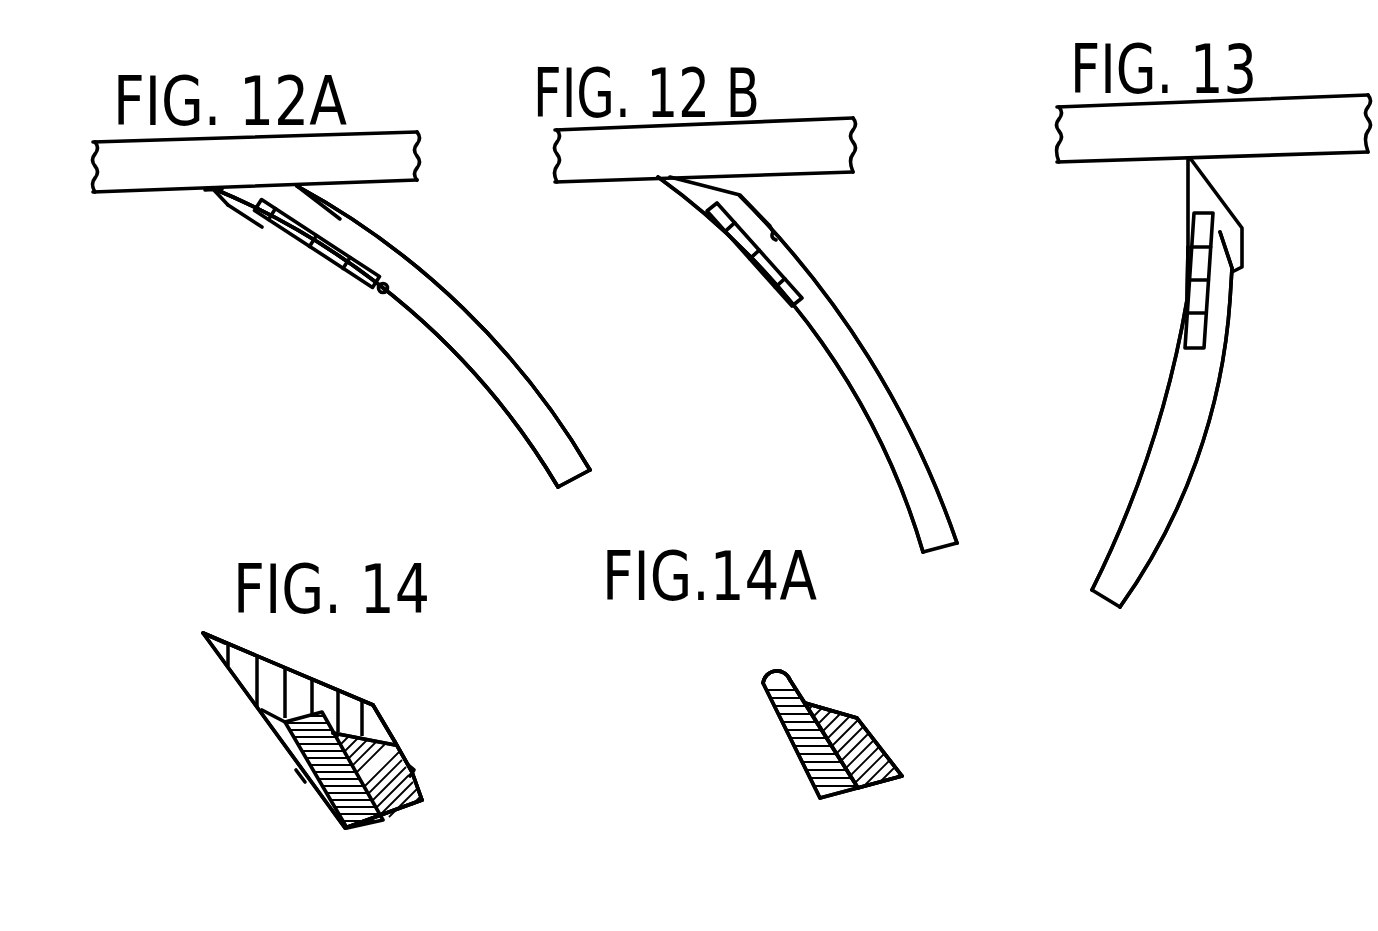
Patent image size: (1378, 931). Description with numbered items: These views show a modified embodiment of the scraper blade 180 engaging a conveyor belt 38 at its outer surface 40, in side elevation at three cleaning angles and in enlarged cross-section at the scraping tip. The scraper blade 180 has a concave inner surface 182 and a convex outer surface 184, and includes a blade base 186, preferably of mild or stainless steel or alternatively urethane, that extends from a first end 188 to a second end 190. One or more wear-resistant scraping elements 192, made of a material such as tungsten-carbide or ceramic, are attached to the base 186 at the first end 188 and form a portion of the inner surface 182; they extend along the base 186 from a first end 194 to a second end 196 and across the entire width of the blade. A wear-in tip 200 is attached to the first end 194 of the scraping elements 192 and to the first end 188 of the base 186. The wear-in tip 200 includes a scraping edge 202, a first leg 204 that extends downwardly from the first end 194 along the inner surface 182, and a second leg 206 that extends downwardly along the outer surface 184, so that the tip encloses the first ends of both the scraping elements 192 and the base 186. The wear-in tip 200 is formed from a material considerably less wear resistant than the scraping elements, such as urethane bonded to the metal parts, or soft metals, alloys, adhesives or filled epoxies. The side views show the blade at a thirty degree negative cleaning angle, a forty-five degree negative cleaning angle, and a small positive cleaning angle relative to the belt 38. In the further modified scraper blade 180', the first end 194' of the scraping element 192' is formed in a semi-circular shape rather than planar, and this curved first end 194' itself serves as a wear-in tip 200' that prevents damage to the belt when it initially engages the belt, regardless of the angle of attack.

In FIG. 12A, the conveyor belt 38 is at (372, 143).
In FIG. 12B, the conveyor belt 38 is at (793, 133).
In FIG. 13, the conveyor belt 38 is at (1300, 113).
In FIG. 12A, the outer surface 40 is at (157, 193).
In FIG. 12B, the outer surface 40 is at (813, 175).
In FIG. 13, the outer surface 40 is at (1313, 157).
In FIG. 12A, the scraper blade 180 is at (401, 336).
In FIG. 12B, the scraper blade 180 is at (816, 364).
In FIG. 13, the scraper blade 180 is at (1216, 419).
In FIG. 14, the scraper blade 180 is at (393, 730).
In FIG. 14A, the scraper blade 180' is at (913, 734).
In FIG. 12A, the concave inner surface 182 is at (440, 340).
In FIG. 14, the concave inner surface 182 is at (347, 832).
In FIG. 14A, the concave inner surface 182 is at (820, 805).
In FIG. 12A, the convex outer surface 184 is at (487, 327).
In FIG. 14, the convex outer surface 184 is at (428, 792).
In FIG. 14A, the convex outer surface 184 is at (902, 762).
In FIG. 12A, the blade base 186 is at (420, 283).
In FIG. 12B, the blade base 186 is at (905, 433).
In FIG. 13, the blade base 186 is at (1200, 400).
In FIG. 14, the blade base 186 is at (362, 717).
In FIG. 14A, the blade base 186 is at (836, 694).
In FIG. 12A, the first end 188 is at (303, 212).
In FIG. 14, the first end 188 is at (398, 736).
In FIG. 14A, the first end 188 is at (853, 720).
In FIG. 12A, the second end 190 is at (583, 482).
In FIG. 12A, the scraping elements 192 is at (293, 251).
In FIG. 12B, the scraping elements 192 is at (720, 266).
In FIG. 13, the scraping elements 192 is at (1148, 280).
In FIG. 14, the scraping elements 192 is at (284, 776).
In FIG. 14A, the scraping elements 192 is at (782, 754).
In FIG. 14A, the scraping element 192' is at (740, 710).
In FIG. 12A, the first end 194 is at (206, 220).
In FIG. 14, the first end 194 is at (232, 726).
In FIG. 14A, the first end 194' is at (714, 689).
In FIG. 12A, the second end 196 is at (383, 296).
In FIG. 12A, the wear-in tip 200 is at (189, 201).
In FIG. 12B, the wear-in tip 200 is at (689, 208).
In FIG. 13, the wear-in tip 200 is at (1169, 215).
In FIG. 14, the wear-in tip 200 is at (249, 684).
In FIG. 14A, the wear-in tip 200' is at (768, 718).
In FIG. 14, the scraping edge 202 is at (203, 633).
In FIG. 14, the first leg 204 is at (302, 782).
In FIG. 14, the second leg 206 is at (412, 770).